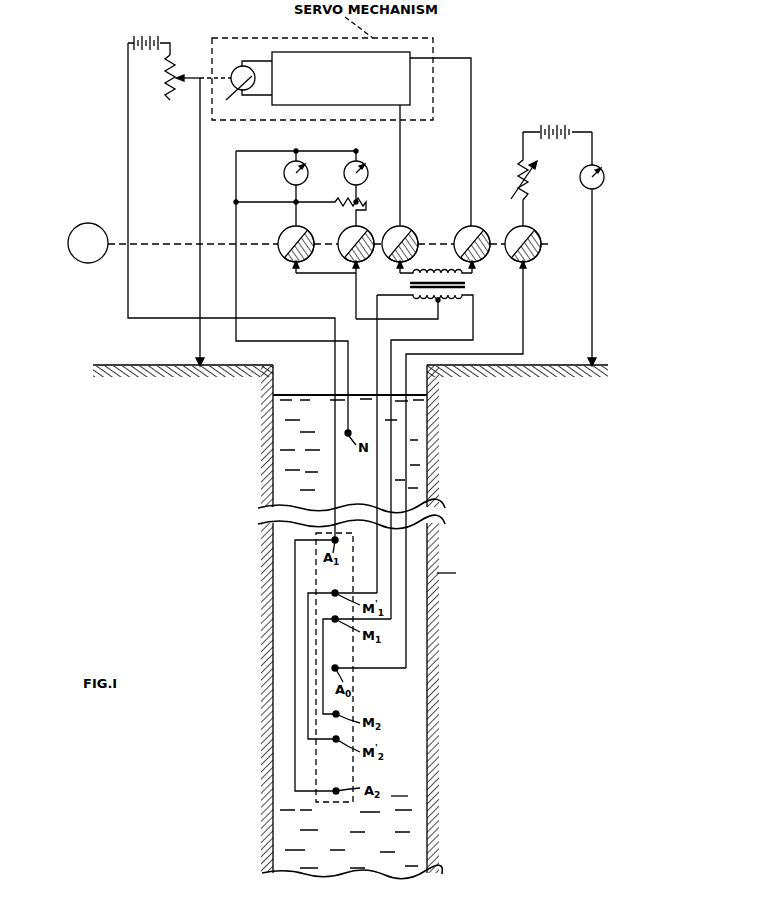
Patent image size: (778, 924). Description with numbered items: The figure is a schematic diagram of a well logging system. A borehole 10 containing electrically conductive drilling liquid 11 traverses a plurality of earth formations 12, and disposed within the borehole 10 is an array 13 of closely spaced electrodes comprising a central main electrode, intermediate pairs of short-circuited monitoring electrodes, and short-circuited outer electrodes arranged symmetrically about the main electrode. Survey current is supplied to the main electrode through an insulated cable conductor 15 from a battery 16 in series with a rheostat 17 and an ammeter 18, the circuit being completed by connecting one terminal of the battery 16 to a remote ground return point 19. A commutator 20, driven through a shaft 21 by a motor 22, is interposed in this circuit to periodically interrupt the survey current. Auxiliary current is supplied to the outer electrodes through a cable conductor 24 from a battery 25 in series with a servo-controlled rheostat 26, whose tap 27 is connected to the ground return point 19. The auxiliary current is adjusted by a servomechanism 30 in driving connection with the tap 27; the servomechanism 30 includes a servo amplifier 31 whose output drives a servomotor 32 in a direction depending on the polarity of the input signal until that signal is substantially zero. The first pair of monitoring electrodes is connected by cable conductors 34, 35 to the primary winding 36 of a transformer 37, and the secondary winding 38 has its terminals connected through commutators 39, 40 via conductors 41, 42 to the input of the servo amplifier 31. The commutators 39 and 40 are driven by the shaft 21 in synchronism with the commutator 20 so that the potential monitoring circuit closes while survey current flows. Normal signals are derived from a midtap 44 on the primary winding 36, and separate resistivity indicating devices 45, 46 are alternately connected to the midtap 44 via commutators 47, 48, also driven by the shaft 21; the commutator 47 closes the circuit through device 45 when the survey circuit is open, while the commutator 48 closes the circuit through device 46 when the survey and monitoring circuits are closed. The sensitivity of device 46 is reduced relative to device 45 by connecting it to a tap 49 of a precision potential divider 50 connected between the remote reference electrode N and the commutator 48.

The borehole 10 is at (427, 706).
The drilling liquid 11 is at (400, 788).
The earth formations 12 is at (446, 565).
The electrode array 13 is at (330, 804).
The cable conductor 15 is at (364, 670).
The battery 16 is at (556, 128).
The rheostat 17 is at (530, 178).
The ammeter 18 is at (604, 186).
The ground return point 19 is at (197, 370).
The commutator 20 is at (540, 249).
The shaft 21 is at (436, 242).
The motor 22 is at (73, 232).
The cable conductor 24 is at (333, 419).
The battery 25 is at (148, 38).
The servo-controlled rheostat 26 is at (167, 94).
The tap 27 is at (192, 72).
The servomechanism 30 is at (433, 38).
The servo amplifier 31 is at (291, 52).
The servomotor 32 is at (236, 89).
The cable conductor 34 is at (390, 452).
The cable conductor 35 is at (377, 489).
The primary winding 36 is at (445, 301).
The transformer 37 is at (467, 286).
The secondary winding 38 is at (449, 271).
The commutator 39 is at (407, 229).
The commutator 40 is at (480, 229).
The conductor 41 is at (400, 176).
The conductor 42 is at (471, 120).
The midtap 44 is at (434, 303).
The resistivity indicating device 45 is at (284, 173).
The resistivity indicating device 46 is at (364, 168).
The commutator 47 is at (286, 233).
The commutator 48 is at (347, 232).
The tap 49 is at (346, 201).
The precision potential divider 50 is at (362, 203).